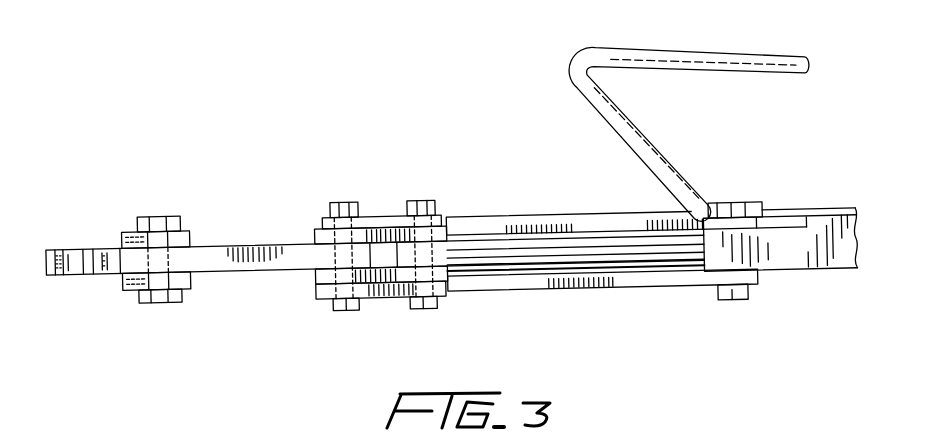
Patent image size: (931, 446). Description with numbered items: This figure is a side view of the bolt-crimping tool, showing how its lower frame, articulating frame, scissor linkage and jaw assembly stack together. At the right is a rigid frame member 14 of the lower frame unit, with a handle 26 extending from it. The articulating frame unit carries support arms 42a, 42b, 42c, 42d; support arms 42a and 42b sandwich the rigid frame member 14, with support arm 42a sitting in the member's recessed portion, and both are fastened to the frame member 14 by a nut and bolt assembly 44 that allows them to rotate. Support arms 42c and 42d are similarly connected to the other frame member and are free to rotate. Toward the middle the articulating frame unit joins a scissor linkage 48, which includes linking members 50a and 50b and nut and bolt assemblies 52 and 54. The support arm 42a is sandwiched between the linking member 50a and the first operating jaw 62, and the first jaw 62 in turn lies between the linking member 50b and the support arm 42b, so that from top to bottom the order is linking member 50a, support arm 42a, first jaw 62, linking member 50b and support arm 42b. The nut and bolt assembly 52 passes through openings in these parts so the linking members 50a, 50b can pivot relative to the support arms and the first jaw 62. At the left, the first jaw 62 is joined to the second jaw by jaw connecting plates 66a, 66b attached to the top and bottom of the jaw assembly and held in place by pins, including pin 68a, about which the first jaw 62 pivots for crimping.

The rigid frame member 14 is at (787, 273).
The handle 26 is at (719, 77).
The support arm 42a is at (650, 184).
The support arm 42b is at (603, 305).
The support arm 42c is at (577, 221).
The support arm 42d is at (634, 272).
The nut and bolt assembly 44 is at (731, 306).
The scissor linkage 48 is at (402, 230).
The linking member 50a is at (443, 218).
The linking member 50b is at (436, 276).
The nut and bolt assembly 52 is at (347, 201).
The nut and bolt assembly 54 is at (428, 201).
The first operating jaw 62 is at (247, 266).
The jaw connecting plate 66a is at (184, 233).
The jaw connecting plate 66b is at (188, 272).
The pin 68a is at (160, 210).